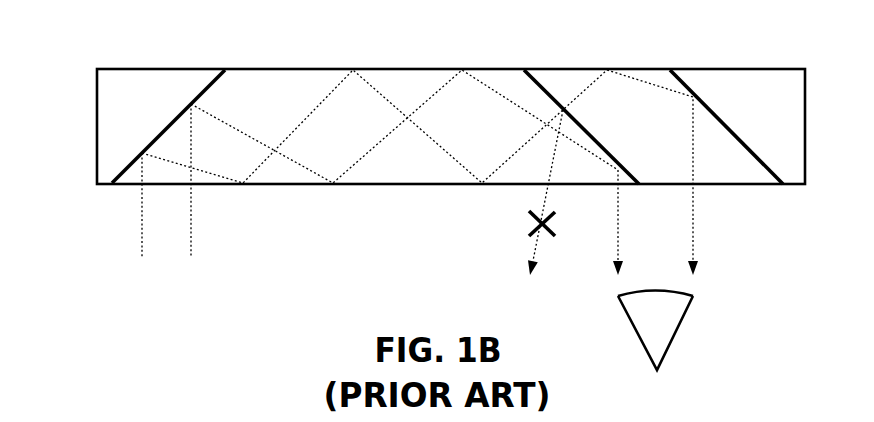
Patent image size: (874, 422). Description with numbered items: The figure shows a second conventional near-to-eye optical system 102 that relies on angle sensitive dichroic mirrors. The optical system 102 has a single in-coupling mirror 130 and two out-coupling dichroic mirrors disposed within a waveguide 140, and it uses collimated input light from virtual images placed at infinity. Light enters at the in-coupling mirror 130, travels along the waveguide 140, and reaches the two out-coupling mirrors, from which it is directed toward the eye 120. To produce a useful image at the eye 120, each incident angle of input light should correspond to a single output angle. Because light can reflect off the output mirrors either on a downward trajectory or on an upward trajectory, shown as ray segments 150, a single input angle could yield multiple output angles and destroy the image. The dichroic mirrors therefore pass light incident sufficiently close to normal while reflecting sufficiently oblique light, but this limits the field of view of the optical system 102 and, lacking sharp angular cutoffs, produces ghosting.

The near-to-eye optical system 102 is at (244, 286).
The eye 120 is at (672, 335).
The in-coupling mirror 130 is at (167, 127).
The waveguide 140 is at (273, 69).
The ray segments 150 is at (523, 148).